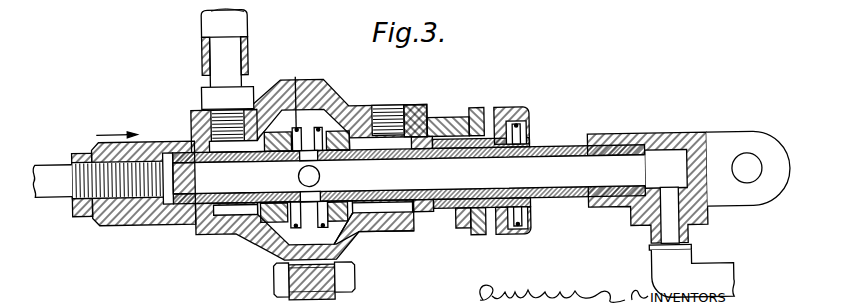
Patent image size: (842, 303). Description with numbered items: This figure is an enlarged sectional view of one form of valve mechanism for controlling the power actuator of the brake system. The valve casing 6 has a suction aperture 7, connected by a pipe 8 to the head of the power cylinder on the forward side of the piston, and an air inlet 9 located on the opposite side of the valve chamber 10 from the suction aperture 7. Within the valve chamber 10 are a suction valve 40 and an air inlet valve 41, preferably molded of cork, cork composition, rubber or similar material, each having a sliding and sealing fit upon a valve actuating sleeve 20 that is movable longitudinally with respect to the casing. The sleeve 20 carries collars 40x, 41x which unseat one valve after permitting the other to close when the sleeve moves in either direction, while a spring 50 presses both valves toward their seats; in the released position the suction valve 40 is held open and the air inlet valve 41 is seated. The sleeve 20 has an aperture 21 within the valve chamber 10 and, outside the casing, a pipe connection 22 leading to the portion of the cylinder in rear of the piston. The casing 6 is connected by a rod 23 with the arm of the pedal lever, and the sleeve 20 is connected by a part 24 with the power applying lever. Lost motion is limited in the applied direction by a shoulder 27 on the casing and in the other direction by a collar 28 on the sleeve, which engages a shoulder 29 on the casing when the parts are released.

The valve casing 6 is at (338, 98).
The suction aperture 7 is at (192, 119).
The pipe 8 is at (243, 27).
The air inlet 9 is at (393, 110).
The valve chamber 10 is at (290, 261).
The valve actuating sleeve 20 is at (548, 149).
The aperture 21 is at (320, 174).
The pipe connection 22 is at (710, 273).
The rod 23 is at (99, 169).
The part 24 is at (722, 147).
The shoulder 27 is at (150, 211).
The collar 28 is at (427, 142).
The shoulder 29 is at (442, 229).
The suction valve 40 is at (273, 245).
The collar 40x is at (233, 233).
The air inlet valve 41 is at (343, 232).
The collar 41x is at (380, 230).
The spring 50 is at (297, 80).